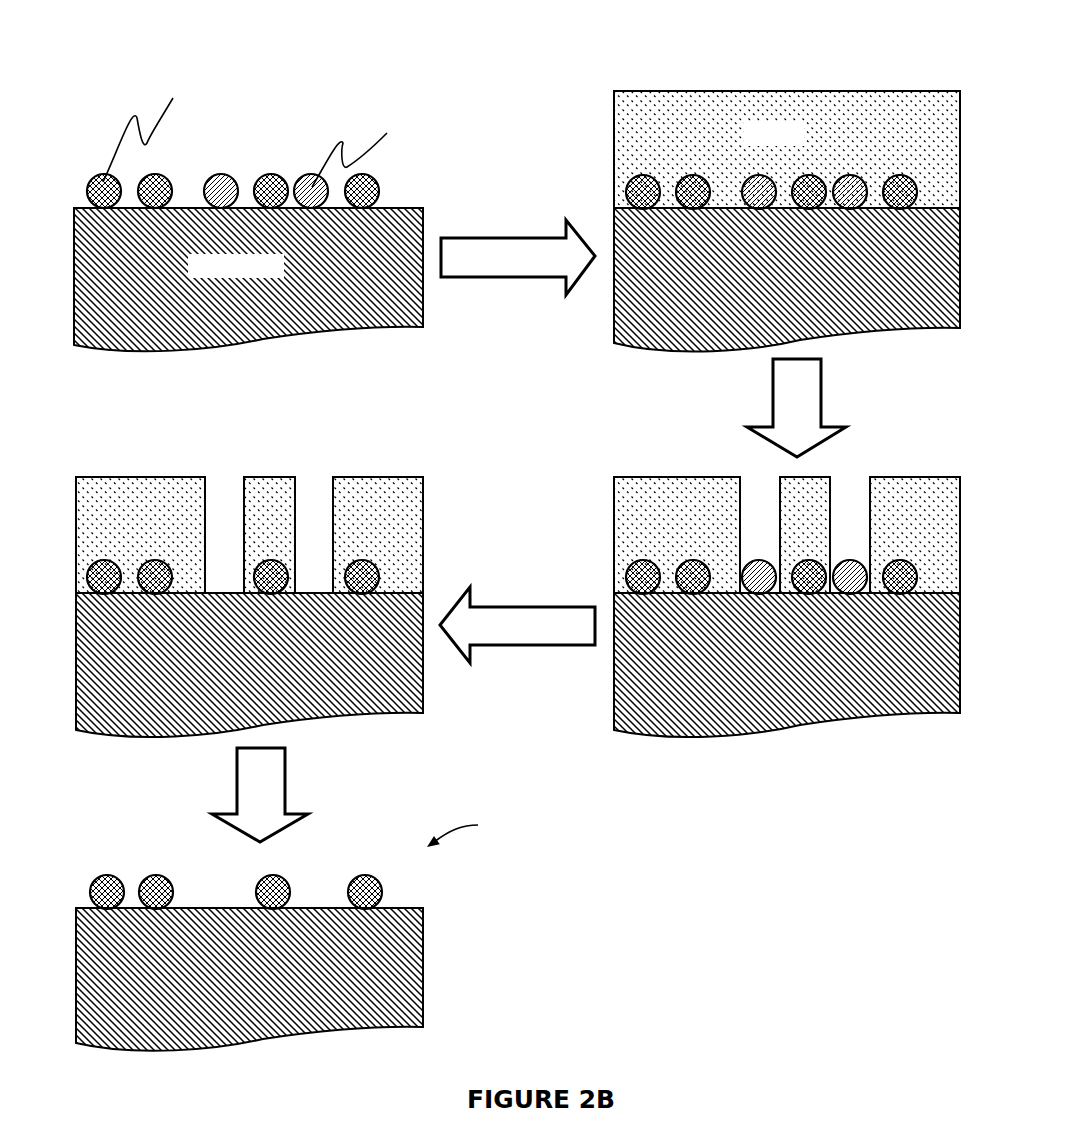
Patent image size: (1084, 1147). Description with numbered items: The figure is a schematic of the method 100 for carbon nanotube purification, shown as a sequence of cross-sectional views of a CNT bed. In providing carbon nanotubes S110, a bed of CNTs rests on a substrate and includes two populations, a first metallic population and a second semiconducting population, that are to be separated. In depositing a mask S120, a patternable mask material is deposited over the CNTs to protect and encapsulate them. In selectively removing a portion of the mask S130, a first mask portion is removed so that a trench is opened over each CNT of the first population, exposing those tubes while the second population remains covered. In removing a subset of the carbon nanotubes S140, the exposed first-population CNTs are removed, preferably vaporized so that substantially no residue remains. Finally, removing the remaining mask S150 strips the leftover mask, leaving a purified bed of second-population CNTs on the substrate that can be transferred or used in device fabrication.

The providing carbon nanotubes S110 is at (368, 38).
The depositing a mask S120 is at (518, 257).
The selectively removing a portion of the mask S130 is at (796, 408).
The removing a subset of the carbon nanotubes S140 is at (517, 625).
The removing the remaining mask S150 is at (260, 795).
The method 100 is at (501, 533).